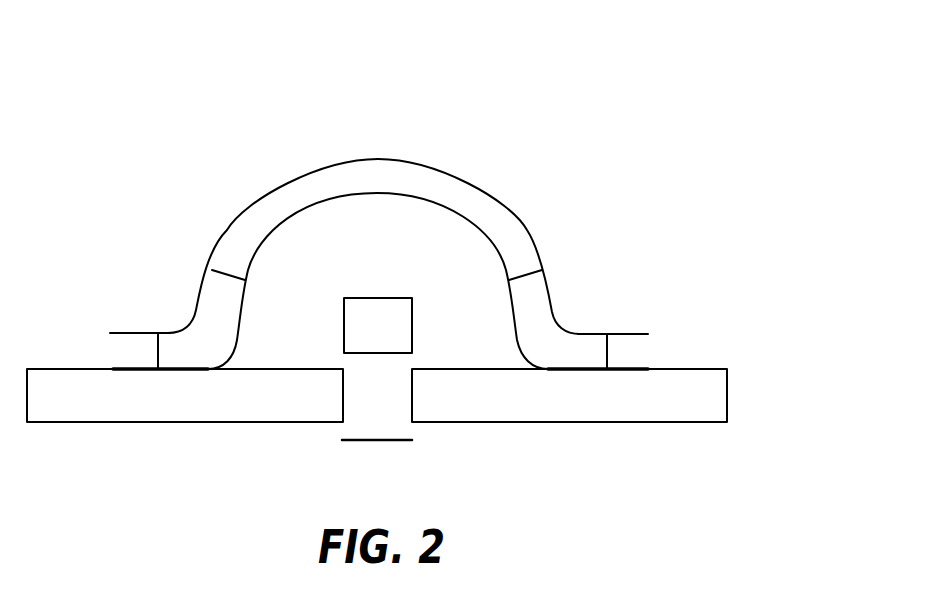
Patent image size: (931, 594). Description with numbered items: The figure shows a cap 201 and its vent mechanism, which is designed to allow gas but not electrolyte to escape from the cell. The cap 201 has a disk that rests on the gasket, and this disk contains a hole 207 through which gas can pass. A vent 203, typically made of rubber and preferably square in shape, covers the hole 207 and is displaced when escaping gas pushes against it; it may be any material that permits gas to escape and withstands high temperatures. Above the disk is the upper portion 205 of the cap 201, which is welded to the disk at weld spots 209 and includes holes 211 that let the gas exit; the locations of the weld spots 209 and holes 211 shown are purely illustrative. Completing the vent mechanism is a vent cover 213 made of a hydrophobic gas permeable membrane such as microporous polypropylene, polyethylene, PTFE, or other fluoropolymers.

The micro-electromechanical switch device 201 is at (618, 74).
The substrate / electrode structures 203 is at (375, 308).
The arched beam (bridge) 205 is at (316, 160).
The gap between substrates 207 is at (378, 392).
The anchor pads 209 is at (158, 353).
The beam section boundaries 211 is at (228, 277).
The bottom contact line 213 is at (375, 443).